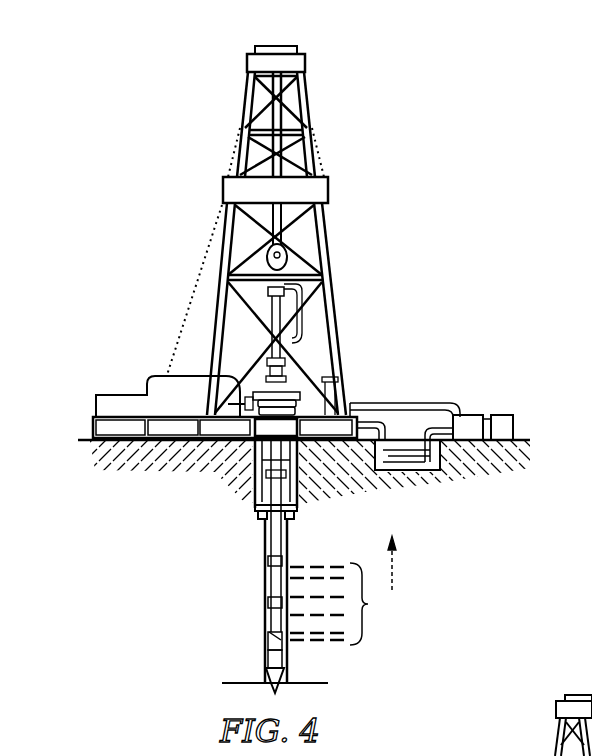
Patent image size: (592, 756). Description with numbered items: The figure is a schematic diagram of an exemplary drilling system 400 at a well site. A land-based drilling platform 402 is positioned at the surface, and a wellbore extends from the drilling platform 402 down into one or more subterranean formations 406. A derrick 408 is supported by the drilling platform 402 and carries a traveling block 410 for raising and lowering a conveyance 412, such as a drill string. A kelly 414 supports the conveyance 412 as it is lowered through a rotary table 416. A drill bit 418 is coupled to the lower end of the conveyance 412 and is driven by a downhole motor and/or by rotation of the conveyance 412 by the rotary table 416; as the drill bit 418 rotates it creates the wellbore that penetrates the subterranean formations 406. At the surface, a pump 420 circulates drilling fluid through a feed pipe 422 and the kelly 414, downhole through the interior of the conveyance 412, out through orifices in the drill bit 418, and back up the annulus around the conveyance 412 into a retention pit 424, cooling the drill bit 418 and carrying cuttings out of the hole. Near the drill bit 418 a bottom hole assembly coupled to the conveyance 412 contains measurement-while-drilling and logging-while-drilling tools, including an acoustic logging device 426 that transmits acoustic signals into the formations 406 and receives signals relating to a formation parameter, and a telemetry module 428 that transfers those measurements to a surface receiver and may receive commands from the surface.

The drilling system 400 is at (281, 369).
The drilling platform 402 is at (93, 427).
The subterranean formations 406 is at (349, 604).
The derrick 408 is at (309, 113).
The traveling block 410 is at (235, 268).
The conveyance 412 is at (279, 531).
The kelly 414 is at (276, 331).
The rotary table 416 is at (299, 398).
The drill bit 418 is at (292, 672).
The pump 420 is at (470, 410).
The feed pipe 422 is at (415, 405).
The retention pit 424 is at (407, 462).
The acoustic logging device 426 is at (268, 662).
The telemetry module 428 is at (268, 645).